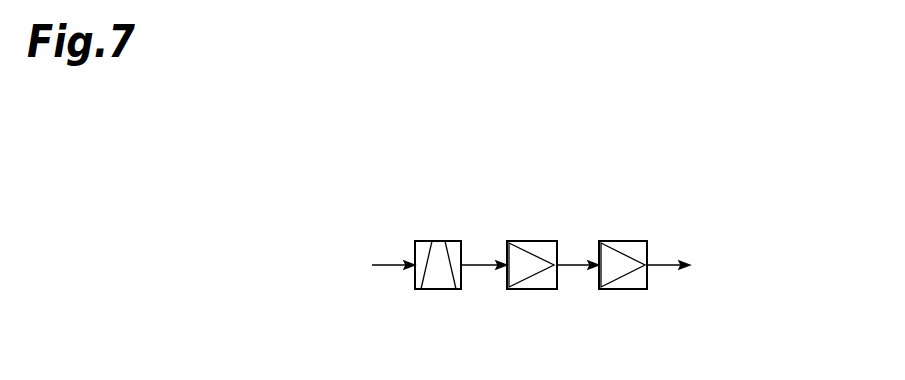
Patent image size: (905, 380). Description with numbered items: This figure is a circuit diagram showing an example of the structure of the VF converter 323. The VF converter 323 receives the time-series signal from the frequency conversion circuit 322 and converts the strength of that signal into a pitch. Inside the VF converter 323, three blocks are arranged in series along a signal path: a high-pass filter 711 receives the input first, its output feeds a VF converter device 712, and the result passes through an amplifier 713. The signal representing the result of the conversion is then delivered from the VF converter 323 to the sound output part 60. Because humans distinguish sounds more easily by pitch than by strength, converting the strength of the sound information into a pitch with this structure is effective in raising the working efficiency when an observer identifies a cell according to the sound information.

The VF converter 323 is at (698, 162).
The frequency conversion circuit 322 is at (286, 264).
The high-pass filter 711 is at (436, 289).
The VF converter device 712 is at (528, 289).
The amplifier 713 is at (620, 289).
The sound output part 60 is at (789, 266).